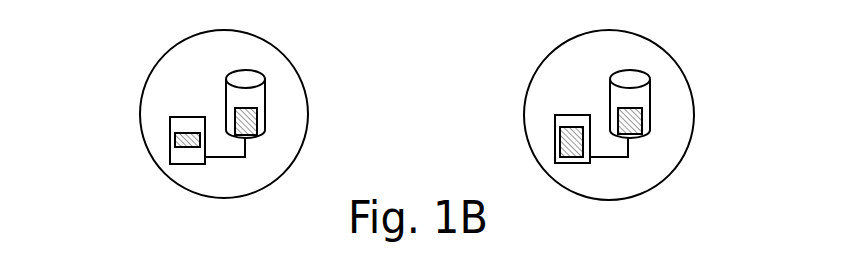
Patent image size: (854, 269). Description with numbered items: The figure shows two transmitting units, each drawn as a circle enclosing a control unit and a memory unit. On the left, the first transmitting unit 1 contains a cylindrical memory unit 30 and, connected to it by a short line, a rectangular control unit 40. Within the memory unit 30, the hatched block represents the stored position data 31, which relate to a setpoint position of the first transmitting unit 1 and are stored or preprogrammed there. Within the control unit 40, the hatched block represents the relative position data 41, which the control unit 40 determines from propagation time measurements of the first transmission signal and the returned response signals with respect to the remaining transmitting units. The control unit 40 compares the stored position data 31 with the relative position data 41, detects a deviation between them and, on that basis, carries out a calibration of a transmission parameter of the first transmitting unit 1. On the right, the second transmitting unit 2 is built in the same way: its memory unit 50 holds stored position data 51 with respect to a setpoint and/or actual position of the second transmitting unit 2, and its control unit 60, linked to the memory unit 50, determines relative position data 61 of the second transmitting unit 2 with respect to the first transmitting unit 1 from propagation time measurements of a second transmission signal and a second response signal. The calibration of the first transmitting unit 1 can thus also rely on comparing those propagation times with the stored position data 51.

The first transmitting unit 1 is at (188, 72).
The second transmitting unit 2 is at (577, 73).
The memory unit 30 is at (247, 97).
The stored position data 31 is at (247, 123).
The control unit 40 is at (187, 127).
The relative position data 41 is at (174, 142).
The memory unit 50 is at (635, 97).
The stored position data 51 is at (633, 125).
The control unit 60 is at (572, 125).
The relative position data 61 is at (568, 142).